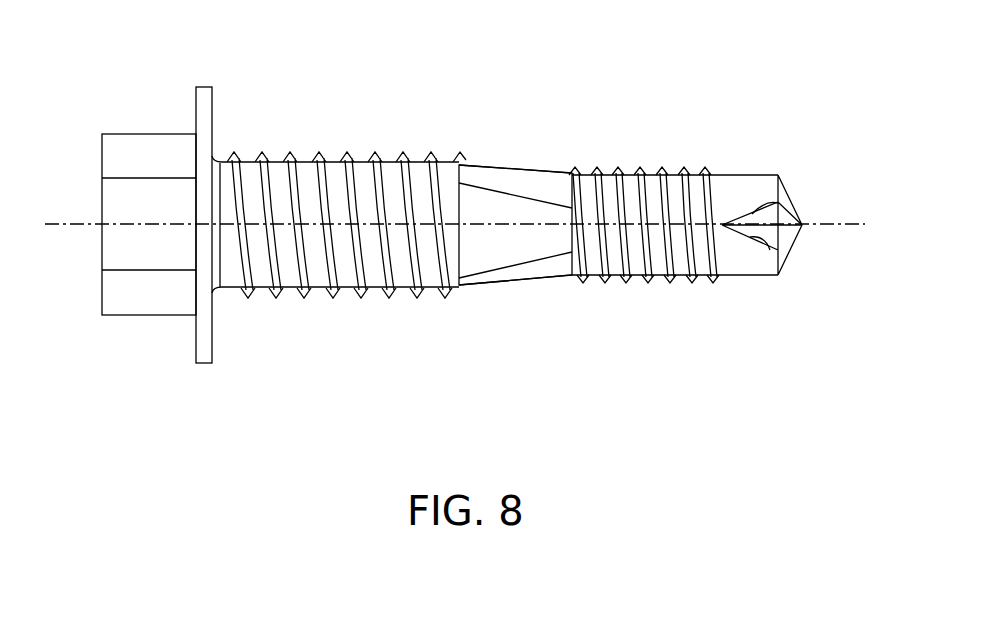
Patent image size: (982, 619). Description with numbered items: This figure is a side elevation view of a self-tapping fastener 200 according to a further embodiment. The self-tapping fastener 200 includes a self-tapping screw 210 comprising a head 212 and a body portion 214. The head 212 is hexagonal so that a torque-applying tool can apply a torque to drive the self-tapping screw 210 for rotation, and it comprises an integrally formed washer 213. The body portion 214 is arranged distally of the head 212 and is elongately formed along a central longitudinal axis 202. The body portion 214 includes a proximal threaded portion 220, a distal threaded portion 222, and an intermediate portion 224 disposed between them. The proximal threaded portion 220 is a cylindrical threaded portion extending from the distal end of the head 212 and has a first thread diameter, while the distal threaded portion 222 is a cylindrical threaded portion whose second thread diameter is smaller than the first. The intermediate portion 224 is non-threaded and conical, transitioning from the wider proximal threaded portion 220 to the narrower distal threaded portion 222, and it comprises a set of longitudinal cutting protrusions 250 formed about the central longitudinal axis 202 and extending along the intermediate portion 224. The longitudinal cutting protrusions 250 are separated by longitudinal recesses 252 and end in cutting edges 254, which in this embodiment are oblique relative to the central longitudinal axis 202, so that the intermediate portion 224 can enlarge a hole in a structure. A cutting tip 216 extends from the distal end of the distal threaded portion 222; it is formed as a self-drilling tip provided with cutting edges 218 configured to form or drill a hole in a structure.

The self-tapping fastener 200 is at (592, 72).
The central longitudinal axis 202 is at (826, 228).
The self-tapping screw 210 is at (625, 112).
The head 212 is at (145, 133).
The integrated washer 213 is at (205, 86).
The body portion 214 is at (391, 122).
The cutting tip 216 is at (777, 147).
The cutting edges 218 is at (770, 211).
The proximal threaded portion 220 is at (333, 158).
The distal threaded portion 222 is at (650, 170).
The intermediate portion 224 is at (490, 188).
The longitudinal cutting protrusions 250 is at (469, 160).
The longitudinal recesses 252 is at (538, 180).
The cutting edges 254 is at (478, 164).